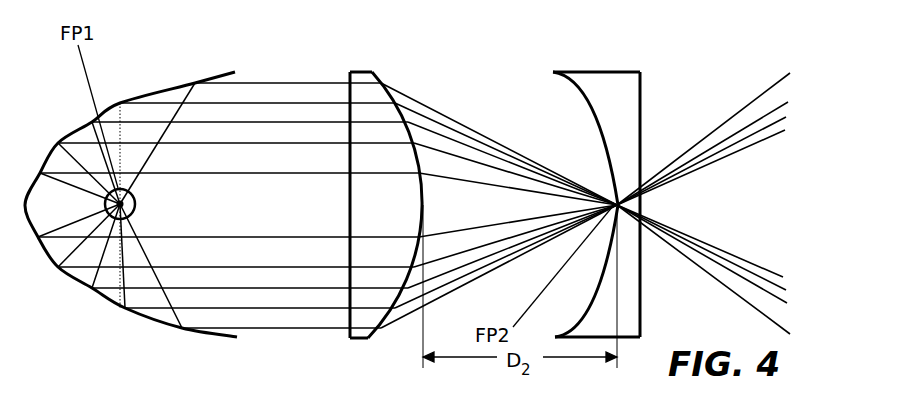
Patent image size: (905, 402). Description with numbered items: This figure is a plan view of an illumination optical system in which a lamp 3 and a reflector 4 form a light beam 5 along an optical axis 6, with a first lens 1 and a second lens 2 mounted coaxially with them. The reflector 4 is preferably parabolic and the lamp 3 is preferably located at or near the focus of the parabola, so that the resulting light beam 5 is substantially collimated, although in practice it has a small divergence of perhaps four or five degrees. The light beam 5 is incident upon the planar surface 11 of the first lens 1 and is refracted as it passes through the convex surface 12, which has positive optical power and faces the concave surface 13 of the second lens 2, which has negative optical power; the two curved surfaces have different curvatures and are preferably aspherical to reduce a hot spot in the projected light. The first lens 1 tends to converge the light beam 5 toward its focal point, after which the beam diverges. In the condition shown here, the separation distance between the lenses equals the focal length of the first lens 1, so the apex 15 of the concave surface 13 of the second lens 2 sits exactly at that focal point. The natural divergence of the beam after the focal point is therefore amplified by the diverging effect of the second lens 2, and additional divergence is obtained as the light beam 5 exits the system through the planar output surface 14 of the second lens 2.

The first lens 1 is at (361, 169).
The second lens 2 is at (596, 168).
The lamp 3 is at (110, 213).
The reflector 4 is at (213, 337).
The light beam 5 is at (288, 329).
The optical axis 6 is at (237, 203).
The planar surface 11 is at (348, 82).
The convex surface 12 is at (385, 88).
The concave surface 13 is at (580, 95).
The planar output surface 14 is at (642, 95).
The apex 15 is at (614, 202).